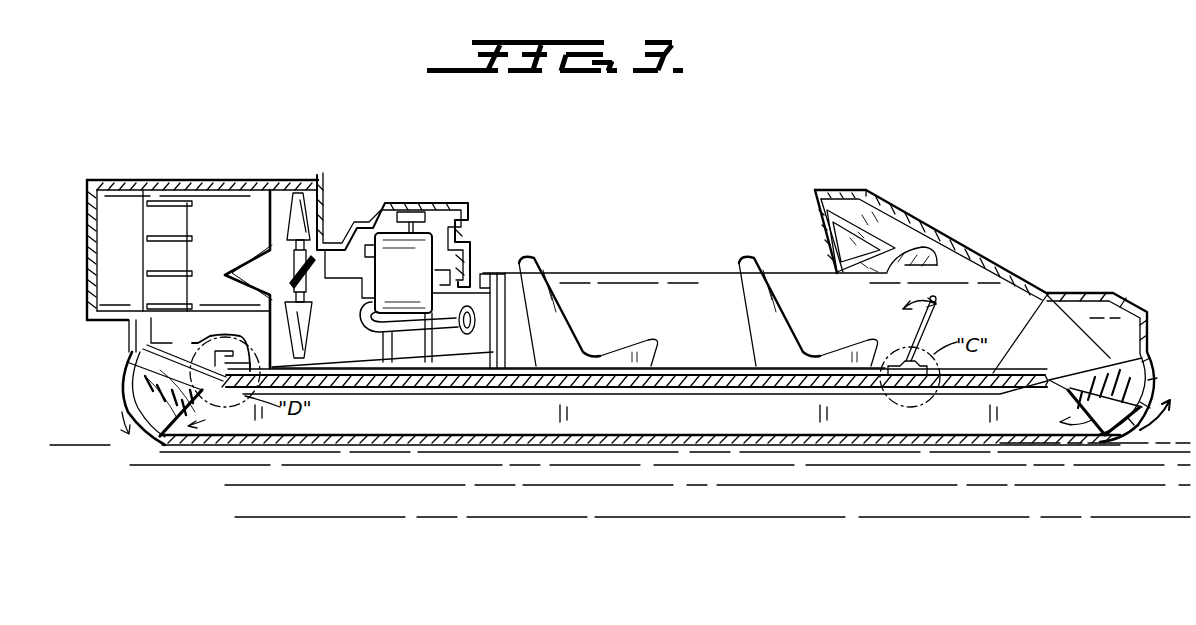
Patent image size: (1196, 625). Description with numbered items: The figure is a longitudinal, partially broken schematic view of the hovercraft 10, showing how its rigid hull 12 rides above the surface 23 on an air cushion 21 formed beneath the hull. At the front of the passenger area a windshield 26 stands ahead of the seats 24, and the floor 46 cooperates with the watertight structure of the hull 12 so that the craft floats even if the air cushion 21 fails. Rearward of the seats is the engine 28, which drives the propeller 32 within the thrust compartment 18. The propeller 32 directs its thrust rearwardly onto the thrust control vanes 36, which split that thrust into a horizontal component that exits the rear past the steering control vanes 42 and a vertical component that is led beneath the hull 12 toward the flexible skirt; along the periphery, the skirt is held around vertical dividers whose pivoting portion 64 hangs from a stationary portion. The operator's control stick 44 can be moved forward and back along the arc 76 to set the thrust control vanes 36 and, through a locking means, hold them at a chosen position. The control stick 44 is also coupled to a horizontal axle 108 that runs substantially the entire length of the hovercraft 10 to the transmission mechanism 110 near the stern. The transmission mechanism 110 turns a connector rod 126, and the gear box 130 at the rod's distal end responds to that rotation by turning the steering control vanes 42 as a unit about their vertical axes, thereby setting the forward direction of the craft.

The hovercraft 10 is at (1066, 140).
The rigid hull 12 is at (1108, 316).
The thrust compartment 18 is at (243, 152).
The air cushion 21 is at (800, 423).
The surface 23 is at (612, 516).
The seats 24 is at (778, 316).
The windshield 26 is at (884, 225).
The engine 28 is at (415, 203).
The propeller 32 is at (284, 206).
The thrust control vanes 36 is at (165, 305).
The steering control vanes 42 is at (118, 208).
The control stick 44 is at (940, 318).
The floor 46 is at (442, 385).
The pivoting portion 64 is at (153, 427).
The arc of control stick movement 76 is at (910, 303).
The horizontal axle 108 is at (700, 373).
The transmission mechanism 110 is at (233, 418).
The connector rod 126 is at (130, 373).
The gear box 130 is at (145, 328).